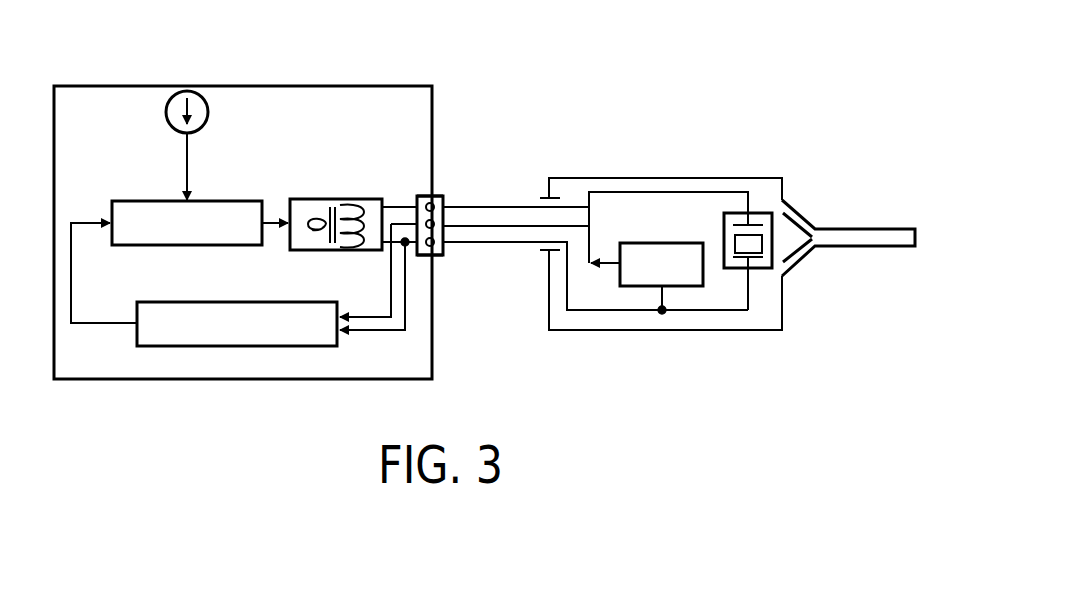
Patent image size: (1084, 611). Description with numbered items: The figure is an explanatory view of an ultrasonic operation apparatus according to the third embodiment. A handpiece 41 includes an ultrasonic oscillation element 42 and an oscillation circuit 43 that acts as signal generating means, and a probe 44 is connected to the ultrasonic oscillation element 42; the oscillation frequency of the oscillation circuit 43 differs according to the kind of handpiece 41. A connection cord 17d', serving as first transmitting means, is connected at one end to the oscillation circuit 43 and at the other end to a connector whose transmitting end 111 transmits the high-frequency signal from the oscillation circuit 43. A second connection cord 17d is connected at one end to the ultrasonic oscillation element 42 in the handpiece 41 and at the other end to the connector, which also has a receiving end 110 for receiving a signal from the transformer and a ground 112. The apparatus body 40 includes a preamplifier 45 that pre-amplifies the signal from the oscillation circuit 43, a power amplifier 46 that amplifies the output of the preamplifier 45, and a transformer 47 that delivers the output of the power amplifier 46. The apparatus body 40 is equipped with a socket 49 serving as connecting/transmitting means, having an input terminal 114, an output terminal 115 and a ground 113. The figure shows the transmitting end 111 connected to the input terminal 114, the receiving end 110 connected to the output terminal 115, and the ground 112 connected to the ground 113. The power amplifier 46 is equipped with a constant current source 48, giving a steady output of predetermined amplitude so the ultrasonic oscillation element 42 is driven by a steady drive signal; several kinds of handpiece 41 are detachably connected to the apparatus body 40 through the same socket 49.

The apparatus body 40 is at (311, 86).
The handpiece 41 is at (637, 178).
The ultrasonic oscillation element 42 is at (759, 213).
The oscillation circuit 43 is at (659, 243).
The probe 44 is at (865, 229).
The preamplifier 45 is at (288, 302).
The power amplifier 46 is at (220, 249).
The transformer 47 is at (304, 199).
The constant current source 48 is at (208, 112).
The socket 49 is at (444, 196).
The receiving end 110 is at (444, 209).
The transmitting end 111 is at (444, 226).
The ground 112 is at (444, 244).
The ground 113 is at (428, 260).
The input terminal 114 is at (420, 206).
The output terminal 115 is at (419, 196).
The connection cord 17d is at (516, 185).
The connection cord 17d' is at (516, 179).